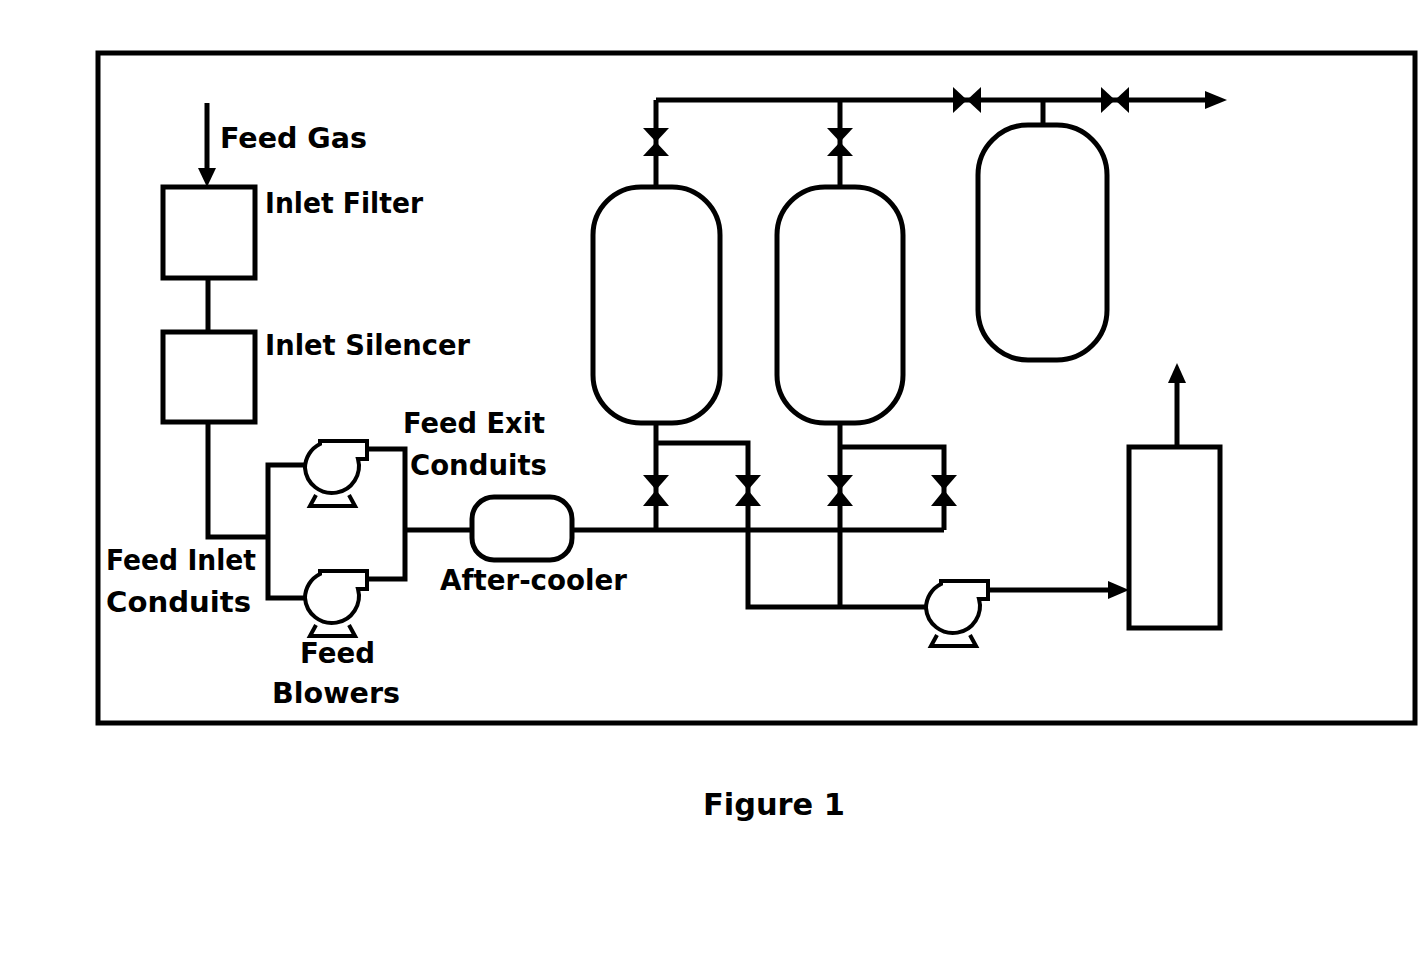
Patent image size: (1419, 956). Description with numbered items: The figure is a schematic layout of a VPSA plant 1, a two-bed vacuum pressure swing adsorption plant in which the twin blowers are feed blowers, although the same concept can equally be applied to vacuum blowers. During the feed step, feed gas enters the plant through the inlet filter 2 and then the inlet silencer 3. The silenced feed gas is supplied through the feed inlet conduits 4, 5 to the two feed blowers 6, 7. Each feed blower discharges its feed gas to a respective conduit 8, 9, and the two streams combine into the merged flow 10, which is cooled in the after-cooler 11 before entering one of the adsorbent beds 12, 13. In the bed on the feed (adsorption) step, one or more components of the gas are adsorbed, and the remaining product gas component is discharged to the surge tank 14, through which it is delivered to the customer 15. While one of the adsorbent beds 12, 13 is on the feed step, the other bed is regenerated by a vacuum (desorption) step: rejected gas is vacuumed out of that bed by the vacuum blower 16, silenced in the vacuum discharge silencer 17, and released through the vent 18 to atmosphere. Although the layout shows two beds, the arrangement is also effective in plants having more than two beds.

The VPSA plant 1 is at (756, 388).
The inlet filter 2 is at (209, 232).
The inlet silencer 3 is at (209, 377).
The feed inlet conduit 4 is at (287, 501).
The feed inlet conduit 5 is at (287, 567).
The feed blower 6 is at (336, 473).
The feed blower 7 is at (336, 603).
The conduit 8 is at (386, 489).
The conduit 9 is at (386, 556).
The merged flow 10 is at (438, 513).
The after-cooler 11 is at (522, 528).
The adsorbent bed 12 is at (656, 305).
The adsorbent bed 13 is at (840, 305).
The surge tank 14 is at (1042, 230).
The customer 15 is at (1027, 143).
The vacuum blower 16 is at (974, 635).
The vacuum discharge silencer 17 is at (1264, 537).
The vent 18 is at (1218, 398).